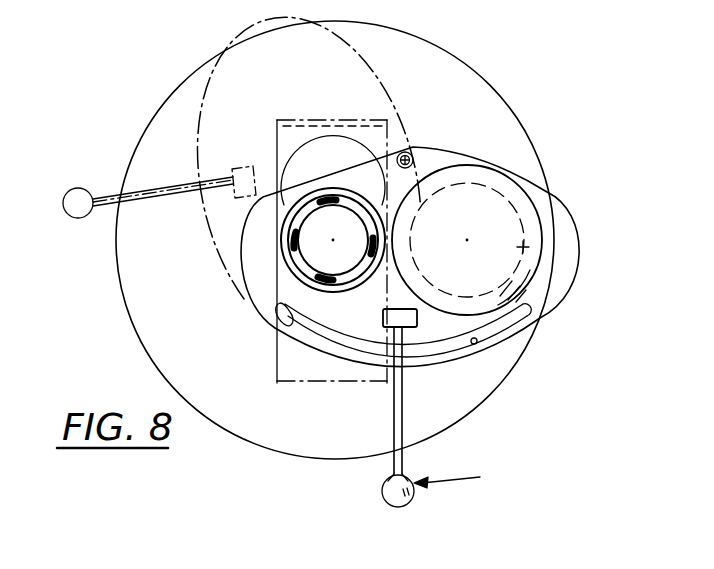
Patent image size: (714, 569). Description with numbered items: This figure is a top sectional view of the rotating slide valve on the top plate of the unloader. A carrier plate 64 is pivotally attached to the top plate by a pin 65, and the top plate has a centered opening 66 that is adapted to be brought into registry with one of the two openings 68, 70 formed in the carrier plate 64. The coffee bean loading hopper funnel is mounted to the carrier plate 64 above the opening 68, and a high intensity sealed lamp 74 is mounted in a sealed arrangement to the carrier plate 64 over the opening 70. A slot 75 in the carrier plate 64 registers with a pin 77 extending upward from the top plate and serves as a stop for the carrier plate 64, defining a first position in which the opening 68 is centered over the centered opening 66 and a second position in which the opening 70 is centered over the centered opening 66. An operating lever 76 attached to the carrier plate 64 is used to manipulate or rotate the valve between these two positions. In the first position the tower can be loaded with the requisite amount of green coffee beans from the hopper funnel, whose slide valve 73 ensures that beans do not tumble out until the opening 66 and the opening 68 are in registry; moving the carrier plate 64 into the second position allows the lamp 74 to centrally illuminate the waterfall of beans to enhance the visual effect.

The carrier plate 64 is at (569, 212).
The pin 65 is at (412, 153).
The centered opening 66 is at (320, 258).
The opening 68 is at (303, 240).
The opening 70 is at (534, 246).
The slide valve 73 is at (284, 392).
The high intensity sealed lamp 74 is at (520, 176).
The slot 75 is at (424, 344).
The operating lever 76 is at (406, 455).
The pin 77 is at (283, 322).